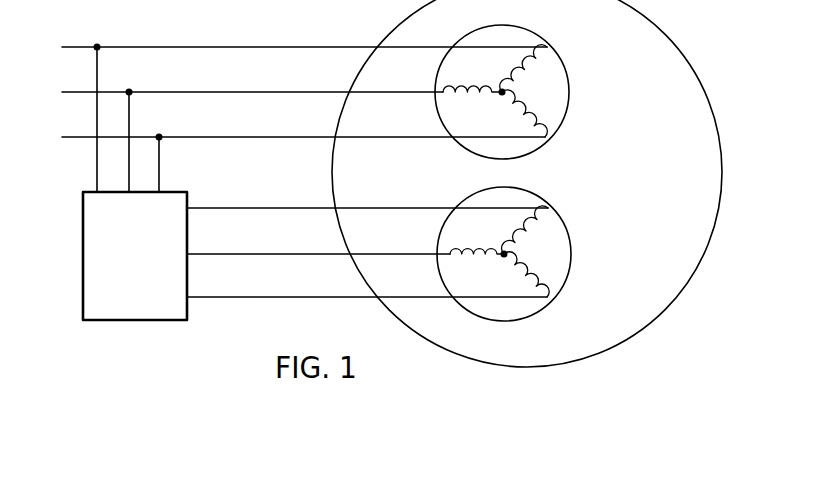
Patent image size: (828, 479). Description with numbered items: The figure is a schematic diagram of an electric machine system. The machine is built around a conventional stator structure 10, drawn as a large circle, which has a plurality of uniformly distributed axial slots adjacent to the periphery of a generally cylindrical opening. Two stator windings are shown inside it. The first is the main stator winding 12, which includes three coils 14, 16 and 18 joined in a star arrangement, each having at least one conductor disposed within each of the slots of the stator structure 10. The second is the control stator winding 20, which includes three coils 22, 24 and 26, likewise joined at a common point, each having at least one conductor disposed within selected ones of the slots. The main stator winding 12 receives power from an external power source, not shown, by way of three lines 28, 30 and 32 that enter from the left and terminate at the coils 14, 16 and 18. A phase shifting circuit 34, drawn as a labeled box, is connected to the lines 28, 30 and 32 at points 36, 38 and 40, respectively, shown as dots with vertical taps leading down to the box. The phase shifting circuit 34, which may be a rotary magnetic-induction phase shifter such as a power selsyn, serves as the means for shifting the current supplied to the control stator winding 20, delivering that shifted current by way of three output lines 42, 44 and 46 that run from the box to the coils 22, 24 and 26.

The stator structure 10 is at (668, 27).
The main stator winding 12 is at (570, 87).
The coil 14 is at (532, 66).
The coil 16 is at (472, 80).
The coil 18 is at (508, 113).
The control stator winding 20 is at (573, 250).
The coil 22 is at (531, 226).
The coil 24 is at (487, 234).
The coil 26 is at (515, 275).
The line 28 is at (261, 47).
The line 30 is at (262, 92).
The line 32 is at (265, 137).
The phase shifting circuit 34 is at (83, 248).
The point 36 is at (97, 46).
The point 38 is at (129, 91).
The point 40 is at (159, 136).
The line 42 is at (265, 208).
The line 44 is at (270, 254).
The line 46 is at (277, 297).